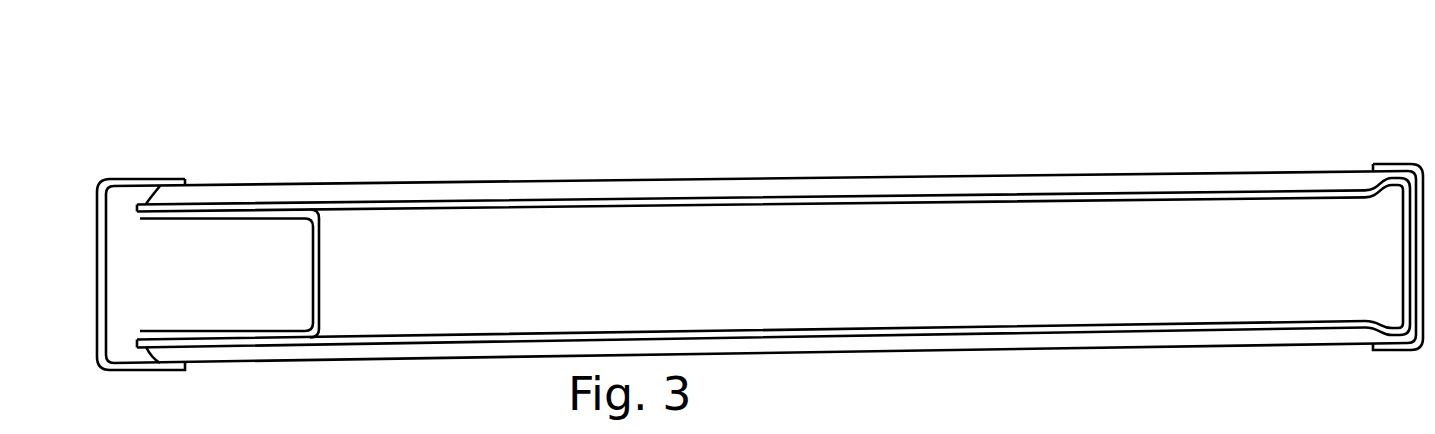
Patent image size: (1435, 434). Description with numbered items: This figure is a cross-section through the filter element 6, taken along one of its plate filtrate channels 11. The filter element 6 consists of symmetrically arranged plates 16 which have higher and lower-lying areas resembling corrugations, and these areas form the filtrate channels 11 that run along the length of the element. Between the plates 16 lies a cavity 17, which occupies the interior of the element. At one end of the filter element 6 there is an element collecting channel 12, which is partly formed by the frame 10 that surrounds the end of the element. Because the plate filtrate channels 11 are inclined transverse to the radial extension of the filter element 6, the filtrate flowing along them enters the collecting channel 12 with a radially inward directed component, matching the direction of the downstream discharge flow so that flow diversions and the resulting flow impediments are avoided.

The filter element 6 is at (1203, 123).
The frame 10 is at (158, 186).
The plate filtrate channel 11 is at (763, 186).
The element collecting channel 12 is at (258, 287).
The plate 16 is at (1073, 196).
The cavity 17 is at (947, 273).